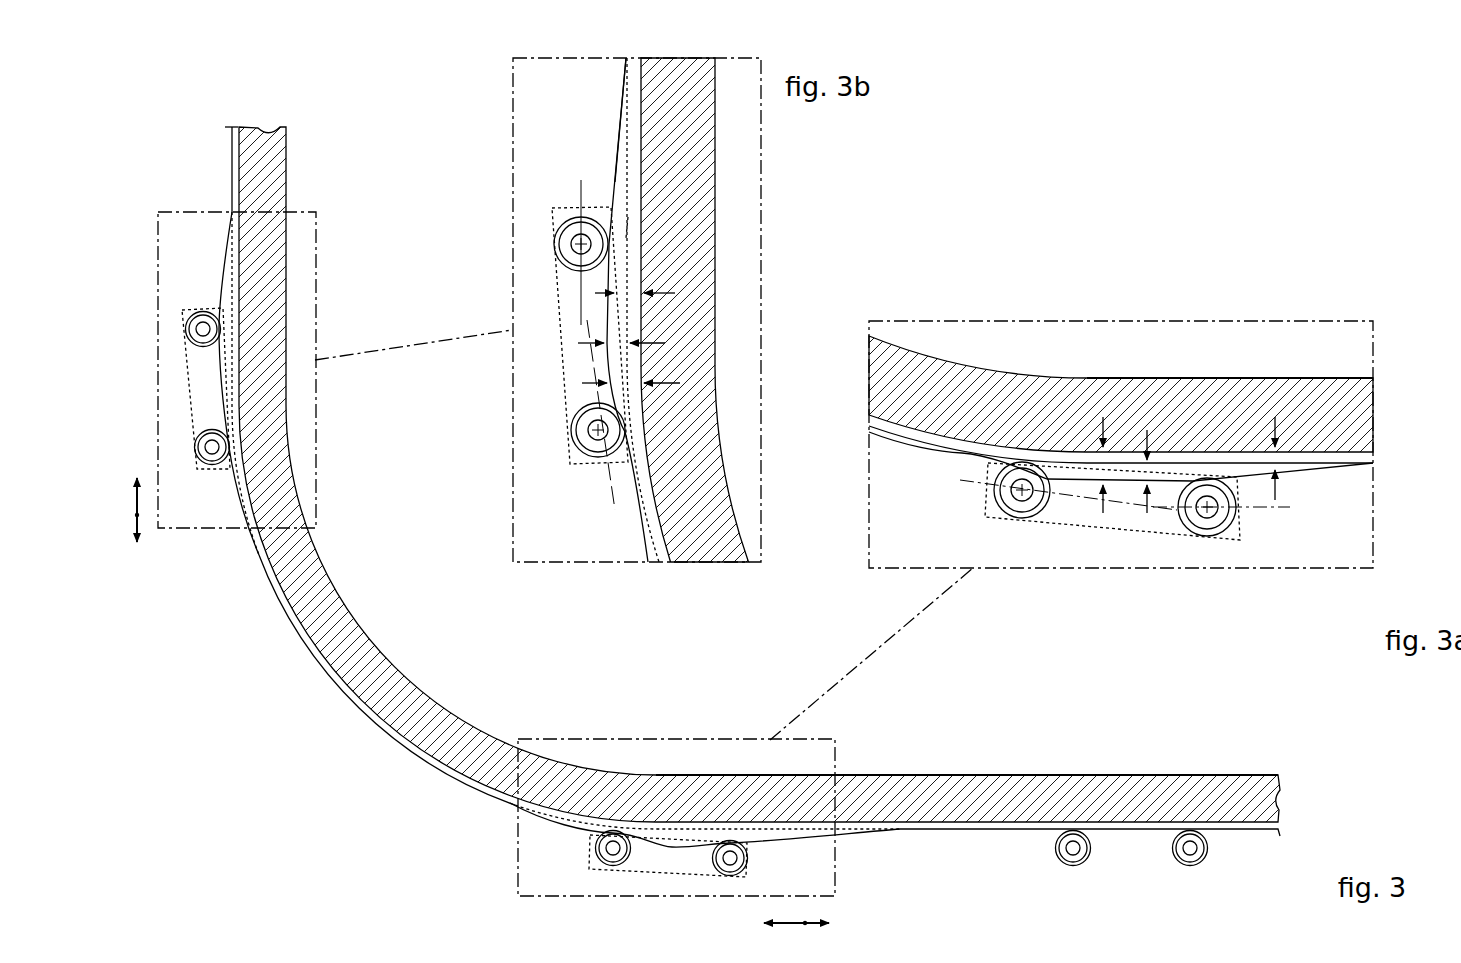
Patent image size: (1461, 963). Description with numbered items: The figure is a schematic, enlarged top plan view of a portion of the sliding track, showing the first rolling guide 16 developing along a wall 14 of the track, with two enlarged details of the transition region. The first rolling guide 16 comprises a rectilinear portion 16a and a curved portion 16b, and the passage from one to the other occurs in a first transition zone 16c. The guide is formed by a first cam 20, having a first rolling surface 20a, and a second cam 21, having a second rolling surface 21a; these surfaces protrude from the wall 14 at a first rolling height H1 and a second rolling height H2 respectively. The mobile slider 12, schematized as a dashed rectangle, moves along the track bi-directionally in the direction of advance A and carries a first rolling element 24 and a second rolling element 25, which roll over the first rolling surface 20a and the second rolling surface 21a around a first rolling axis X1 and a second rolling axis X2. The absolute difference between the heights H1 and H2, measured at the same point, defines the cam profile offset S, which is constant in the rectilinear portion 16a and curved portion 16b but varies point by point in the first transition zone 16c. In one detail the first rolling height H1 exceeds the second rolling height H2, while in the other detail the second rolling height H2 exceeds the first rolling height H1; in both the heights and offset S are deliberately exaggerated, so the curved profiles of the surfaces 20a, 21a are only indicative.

In FIG. 3, the mobile slider 12 is at (175, 376).
In FIG. 3B, the mobile slider 12 is at (540, 300).
In FIG. 3A, the mobile slider 12 is at (1082, 538).
In FIG. 3, the wall 14 is at (271, 162).
In FIG. 3B, the wall 14 is at (693, 535).
In FIG. 3A, the wall 14 is at (1310, 413).
In FIG. 3, the first rolling guide 16 is at (266, 678).
In FIG. 3, the rectilinear portion 16a is at (230, 151).
In FIG. 3, the curved portion 16b is at (393, 740).
In FIG. 3, the first transition zone 16c is at (161, 204).
In FIG. 3B, the first cam 20 is at (633, 75).
In FIG. 3A, the first cam 20 is at (1228, 468).
In FIG. 3B, the first rolling surface 20a is at (628, 217).
In FIG. 3A, the first rolling surface 20a is at (1290, 472).
In FIG. 3B, the second cam 21 is at (618, 212).
In FIG. 3A, the second cam 21 is at (1353, 457).
In FIG. 3B, the second rolling surface 21a is at (615, 182).
In FIG. 3A, the second rolling surface 21a is at (962, 453).
In FIG. 3, the first rolling element 24 is at (201, 445).
In FIG. 3B, the first rolling element 24 is at (582, 447).
In FIG. 3A, the first rolling element 24 is at (1188, 523).
In FIG. 3, the second rolling element 25 is at (191, 326).
In FIG. 3B, the second rolling element 25 is at (572, 229).
In FIG. 3A, the second rolling element 25 is at (1018, 515).
In FIG. 3, the direction of advance A is at (137, 515).
In FIG. 3B, the first rolling axis X1 is at (598, 430).
In FIG. 3A, the first rolling axis X1 is at (1207, 507).
In FIG. 3B, the second rolling axis X2 is at (581, 244).
In FIG. 3A, the second rolling axis X2 is at (1022, 490).
In FIG. 3B, the first rolling height H1 is at (641, 293).
In FIG. 3A, the first rolling height H1 is at (1108, 454).
In FIG. 3B, the second rolling height H2 is at (641, 383).
In FIG. 3A, the second rolling height H2 is at (1270, 454).
In FIG. 3B, the cam profile offset S is at (607, 343).
In FIG. 3A, the cam profile offset S is at (1153, 467).